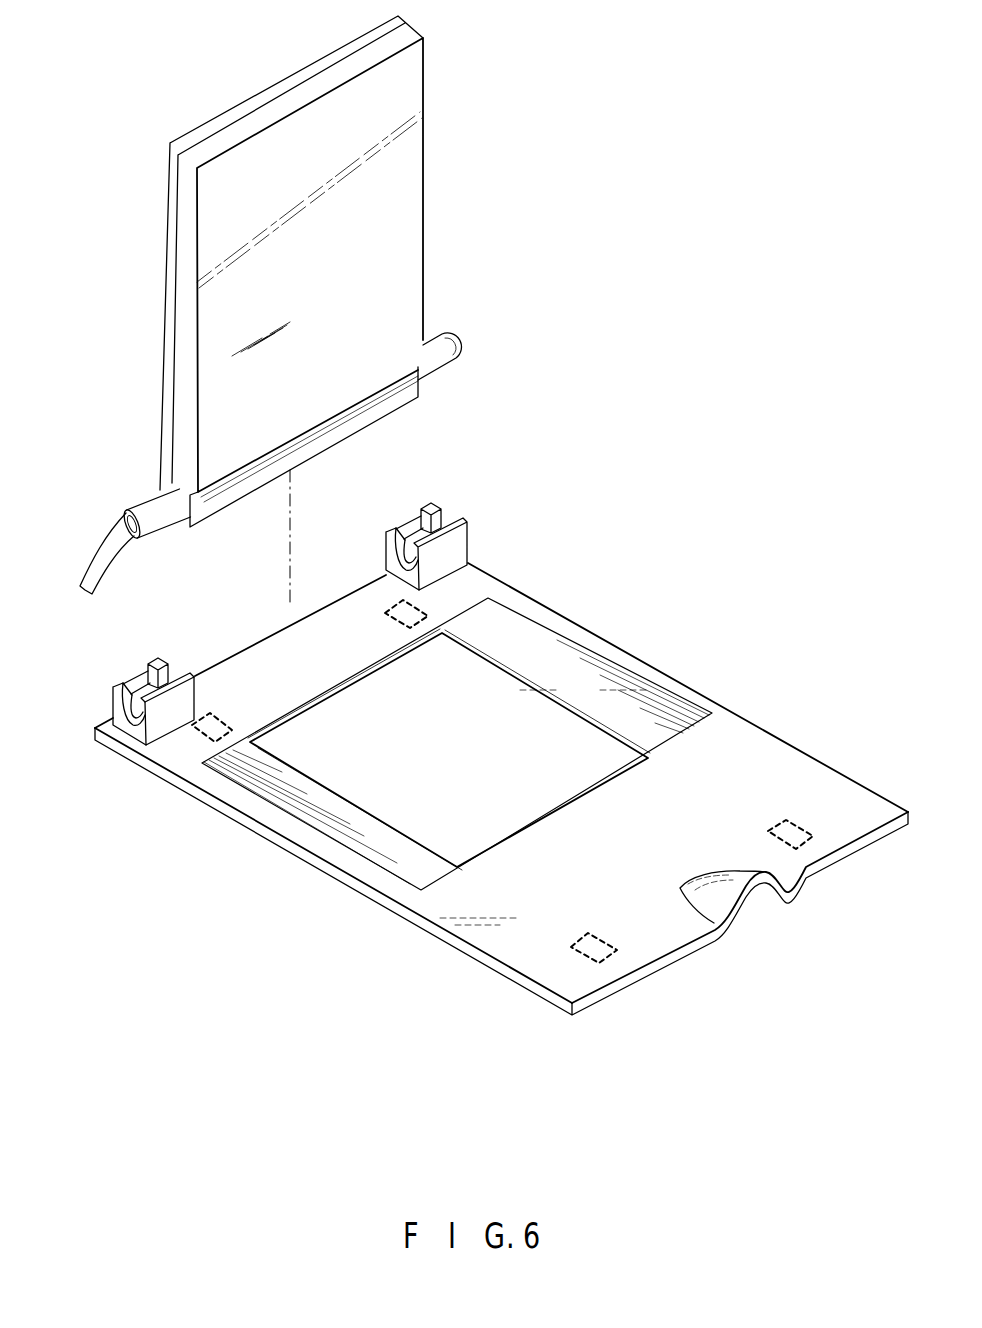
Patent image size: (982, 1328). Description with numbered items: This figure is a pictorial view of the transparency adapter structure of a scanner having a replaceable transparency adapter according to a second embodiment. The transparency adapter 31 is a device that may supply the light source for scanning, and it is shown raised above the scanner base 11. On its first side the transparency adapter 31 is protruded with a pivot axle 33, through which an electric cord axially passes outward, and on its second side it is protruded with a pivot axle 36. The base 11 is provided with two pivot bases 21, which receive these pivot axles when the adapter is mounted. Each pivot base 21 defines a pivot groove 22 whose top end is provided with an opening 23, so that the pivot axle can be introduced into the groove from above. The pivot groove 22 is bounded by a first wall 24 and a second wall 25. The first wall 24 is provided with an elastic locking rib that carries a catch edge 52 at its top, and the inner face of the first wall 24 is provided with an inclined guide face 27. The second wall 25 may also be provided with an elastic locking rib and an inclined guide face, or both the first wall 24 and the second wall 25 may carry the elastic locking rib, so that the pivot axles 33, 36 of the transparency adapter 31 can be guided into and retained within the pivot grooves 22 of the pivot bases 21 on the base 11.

The base 11 is at (670, 692).
The pivot base 21 is at (300, 637).
The pivot groove 22 is at (386, 562).
The opening 23 is at (469, 524).
The first wall 24 is at (113, 696).
The second wall 25 is at (170, 728).
The inclined guide face 27 is at (123, 680).
The transparency adapter 31 is at (397, 135).
The pivot axle 33 is at (147, 508).
The pivot axle 36 is at (441, 332).
The catch edge 52 is at (400, 527).